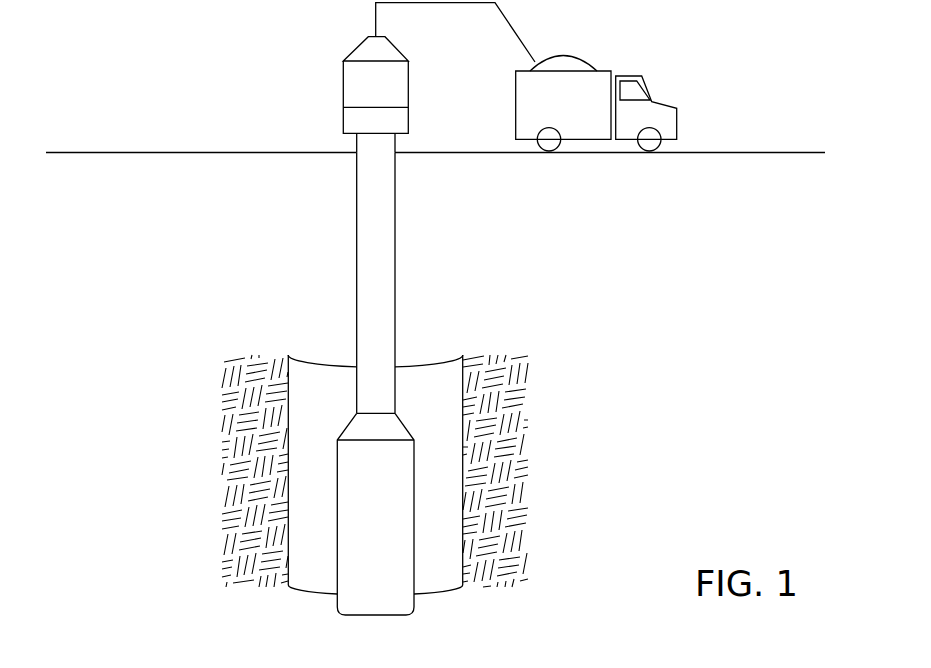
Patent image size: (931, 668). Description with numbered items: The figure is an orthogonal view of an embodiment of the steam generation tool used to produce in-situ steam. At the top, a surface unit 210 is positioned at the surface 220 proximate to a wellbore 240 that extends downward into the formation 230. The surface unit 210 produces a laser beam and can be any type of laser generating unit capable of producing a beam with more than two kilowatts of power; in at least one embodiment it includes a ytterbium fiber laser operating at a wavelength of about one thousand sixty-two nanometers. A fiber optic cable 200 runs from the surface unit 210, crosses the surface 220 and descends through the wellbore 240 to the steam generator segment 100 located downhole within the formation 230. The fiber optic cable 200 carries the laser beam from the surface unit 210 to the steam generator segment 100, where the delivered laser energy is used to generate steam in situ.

The steam generator segment 100 is at (414, 520).
The fiber optic cable 200 is at (357, 233).
The surface unit 210 is at (677, 122).
The surface 220 is at (203, 152).
The formation 230 is at (510, 478).
The wellbore 240 is at (283, 408).